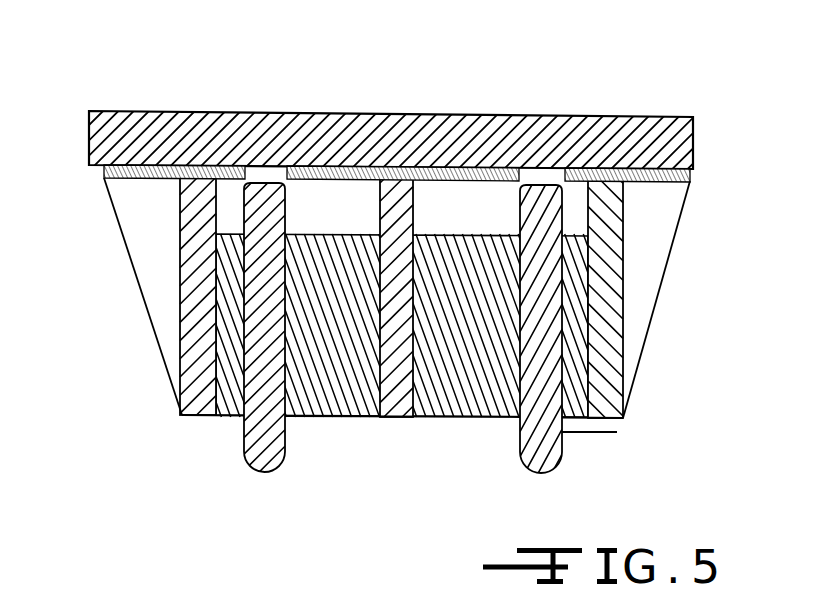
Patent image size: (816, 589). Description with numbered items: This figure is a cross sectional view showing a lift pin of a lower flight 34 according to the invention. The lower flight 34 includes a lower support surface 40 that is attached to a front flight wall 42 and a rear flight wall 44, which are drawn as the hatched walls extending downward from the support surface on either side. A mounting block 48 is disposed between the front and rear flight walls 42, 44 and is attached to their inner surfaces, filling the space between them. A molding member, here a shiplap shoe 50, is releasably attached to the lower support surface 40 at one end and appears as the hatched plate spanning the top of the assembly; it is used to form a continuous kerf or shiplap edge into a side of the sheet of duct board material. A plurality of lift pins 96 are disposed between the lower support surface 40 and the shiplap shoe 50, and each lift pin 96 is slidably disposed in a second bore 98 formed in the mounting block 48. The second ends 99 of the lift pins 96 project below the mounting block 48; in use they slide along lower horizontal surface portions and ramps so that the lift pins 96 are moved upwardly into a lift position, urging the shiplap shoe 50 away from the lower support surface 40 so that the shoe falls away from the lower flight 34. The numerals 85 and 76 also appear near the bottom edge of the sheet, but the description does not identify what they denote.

The lower flight 34 is at (160, 68).
The lower support surface 40 is at (198, 165).
The front flight wall 42 is at (625, 229).
The rear flight wall 44 is at (182, 335).
The mounting block 48 is at (473, 383).
The shiplap shoe 50 is at (547, 117).
The lift pin 96 is at (617, 432).
The second bore 98 is at (562, 292).
The second end of lift pin 99 is at (548, 478).
The element 85 is at (293, 588).
The element 76 is at (327, 588).